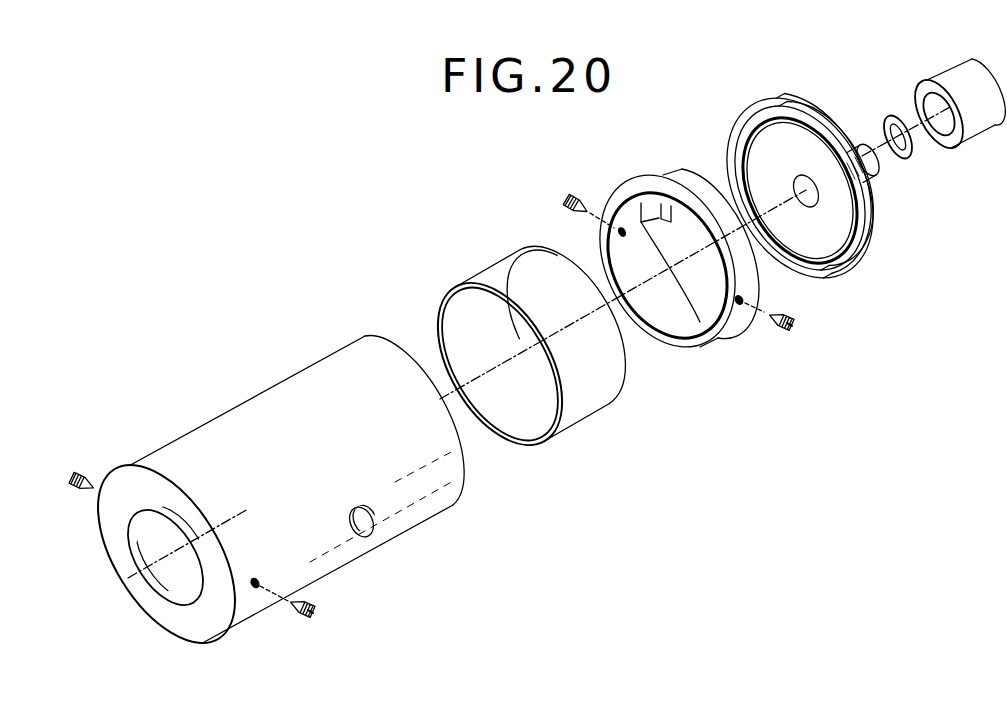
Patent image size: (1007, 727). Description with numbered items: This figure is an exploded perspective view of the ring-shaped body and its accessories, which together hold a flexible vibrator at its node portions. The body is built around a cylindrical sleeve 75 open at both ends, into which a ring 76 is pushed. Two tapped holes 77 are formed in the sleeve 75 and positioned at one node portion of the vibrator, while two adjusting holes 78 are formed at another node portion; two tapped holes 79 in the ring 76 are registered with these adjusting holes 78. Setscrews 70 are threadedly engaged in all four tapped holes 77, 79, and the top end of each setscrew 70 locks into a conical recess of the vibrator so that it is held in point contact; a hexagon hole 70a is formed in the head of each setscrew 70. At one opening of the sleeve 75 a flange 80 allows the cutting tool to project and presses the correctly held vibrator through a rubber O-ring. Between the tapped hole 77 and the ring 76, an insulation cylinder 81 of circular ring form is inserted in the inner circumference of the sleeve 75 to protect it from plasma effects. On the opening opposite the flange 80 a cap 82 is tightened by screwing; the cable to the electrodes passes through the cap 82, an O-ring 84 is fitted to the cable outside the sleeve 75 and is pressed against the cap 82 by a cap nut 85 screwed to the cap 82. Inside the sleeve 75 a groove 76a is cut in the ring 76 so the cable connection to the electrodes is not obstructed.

The setscrew 70 is at (83, 476).
The hexagon hole 70a is at (311, 617).
The cylindrical sleeve 75 is at (267, 508).
The ring 76 is at (669, 258).
The groove 76a is at (646, 208).
The tapped hole 77 is at (257, 589).
The adjusting hole 78 is at (372, 521).
The tapped hole 79 is at (743, 307).
The flange 80 is at (176, 617).
The insulation cylinder 81 is at (505, 277).
The cap 82 is at (788, 115).
The O-ring 84 is at (890, 117).
The cap nut 85 is at (962, 75).